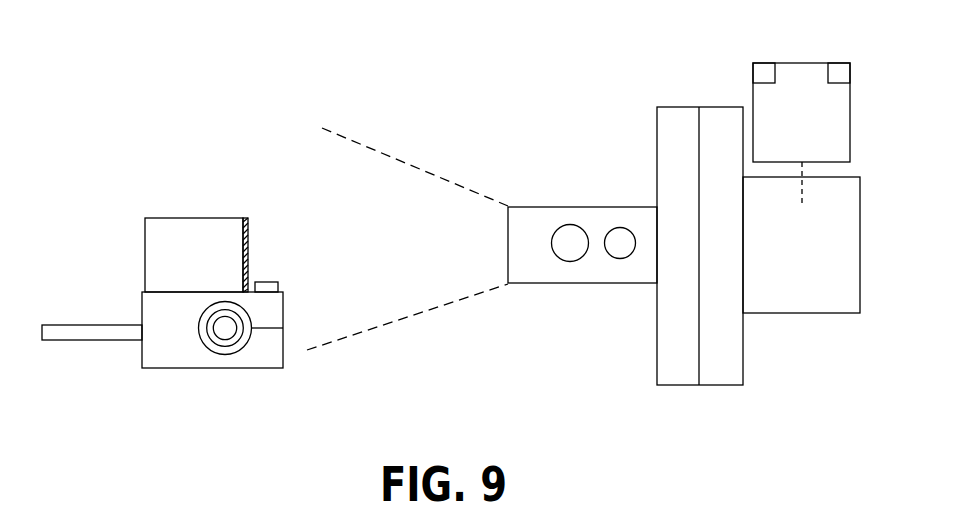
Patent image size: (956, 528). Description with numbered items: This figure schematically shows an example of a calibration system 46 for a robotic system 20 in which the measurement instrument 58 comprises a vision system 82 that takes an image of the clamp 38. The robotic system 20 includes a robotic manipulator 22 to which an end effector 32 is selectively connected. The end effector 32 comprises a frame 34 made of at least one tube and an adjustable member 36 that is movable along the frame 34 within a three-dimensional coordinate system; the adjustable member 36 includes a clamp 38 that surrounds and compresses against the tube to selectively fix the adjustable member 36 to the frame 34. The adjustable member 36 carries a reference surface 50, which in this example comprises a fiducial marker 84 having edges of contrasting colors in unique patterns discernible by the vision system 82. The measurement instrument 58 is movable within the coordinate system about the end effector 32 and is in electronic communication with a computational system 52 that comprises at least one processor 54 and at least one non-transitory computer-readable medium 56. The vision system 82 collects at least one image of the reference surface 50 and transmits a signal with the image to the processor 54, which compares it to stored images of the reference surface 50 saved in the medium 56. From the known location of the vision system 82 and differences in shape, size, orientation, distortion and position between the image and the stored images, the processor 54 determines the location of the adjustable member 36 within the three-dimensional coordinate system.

The robotic system 20 is at (861, 56).
The robotic manipulator 22 is at (800, 308).
The end effector 32 is at (113, 186).
The frame 34 is at (223, 355).
The adjustable member 36 is at (67, 330).
The clamp 38 is at (157, 358).
The calibration system 46 is at (460, 126).
The reference surface 50 is at (248, 240).
The computational system 52 is at (801, 112).
The processor 54 is at (762, 73).
The non-transitory computer-readable medium 56 is at (839, 73).
The measurement instrument 58 is at (677, 110).
The vision system 82 is at (537, 217).
The fiducial marker 84 is at (248, 250).